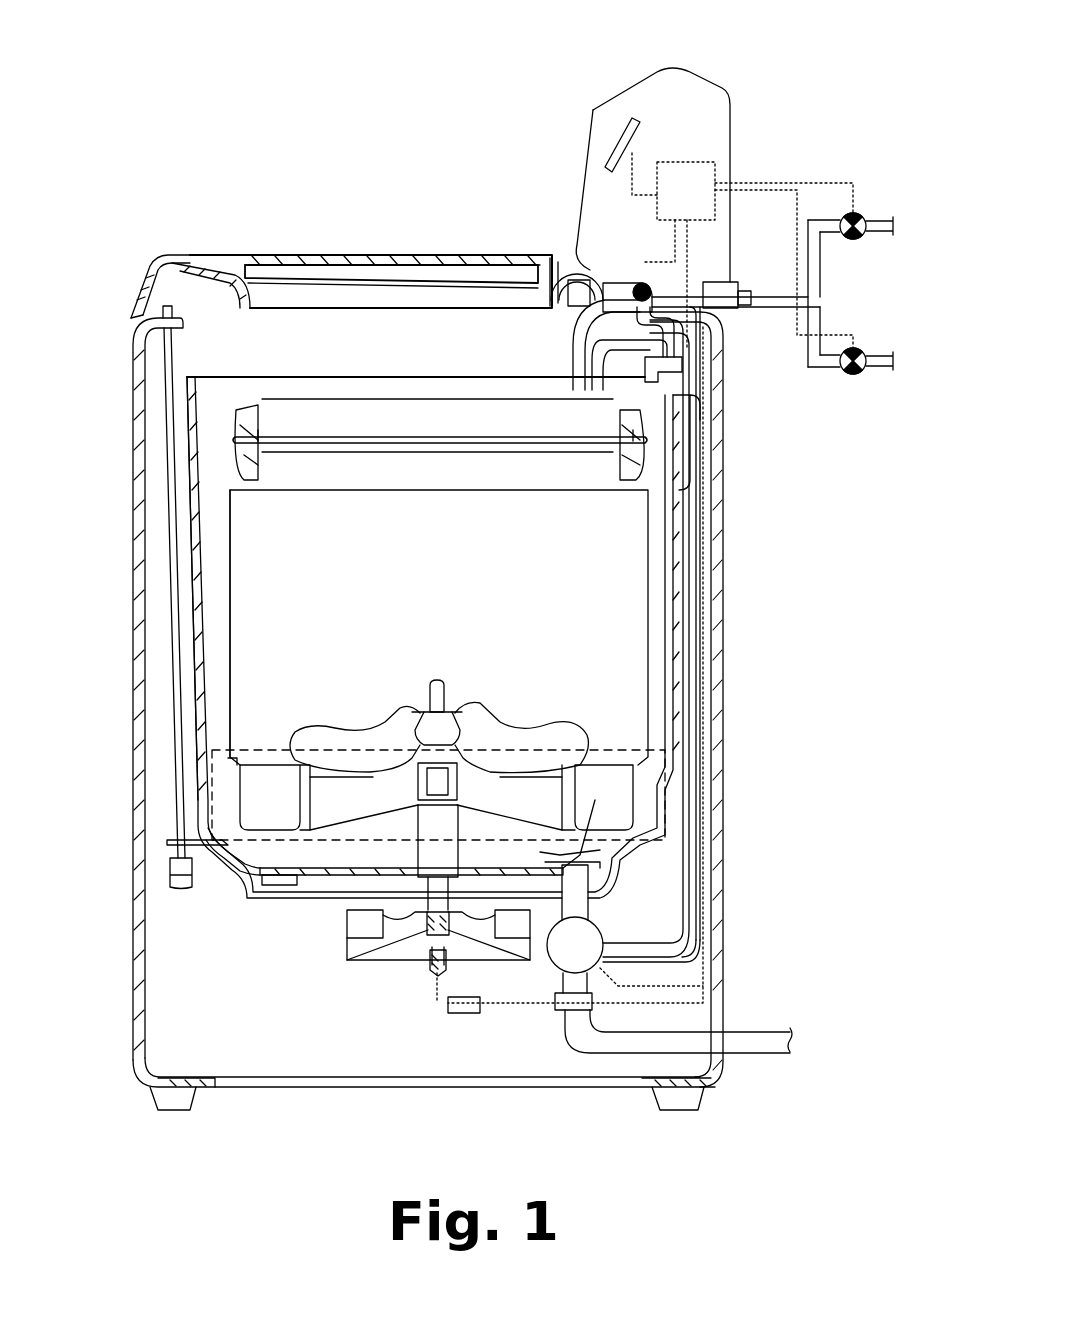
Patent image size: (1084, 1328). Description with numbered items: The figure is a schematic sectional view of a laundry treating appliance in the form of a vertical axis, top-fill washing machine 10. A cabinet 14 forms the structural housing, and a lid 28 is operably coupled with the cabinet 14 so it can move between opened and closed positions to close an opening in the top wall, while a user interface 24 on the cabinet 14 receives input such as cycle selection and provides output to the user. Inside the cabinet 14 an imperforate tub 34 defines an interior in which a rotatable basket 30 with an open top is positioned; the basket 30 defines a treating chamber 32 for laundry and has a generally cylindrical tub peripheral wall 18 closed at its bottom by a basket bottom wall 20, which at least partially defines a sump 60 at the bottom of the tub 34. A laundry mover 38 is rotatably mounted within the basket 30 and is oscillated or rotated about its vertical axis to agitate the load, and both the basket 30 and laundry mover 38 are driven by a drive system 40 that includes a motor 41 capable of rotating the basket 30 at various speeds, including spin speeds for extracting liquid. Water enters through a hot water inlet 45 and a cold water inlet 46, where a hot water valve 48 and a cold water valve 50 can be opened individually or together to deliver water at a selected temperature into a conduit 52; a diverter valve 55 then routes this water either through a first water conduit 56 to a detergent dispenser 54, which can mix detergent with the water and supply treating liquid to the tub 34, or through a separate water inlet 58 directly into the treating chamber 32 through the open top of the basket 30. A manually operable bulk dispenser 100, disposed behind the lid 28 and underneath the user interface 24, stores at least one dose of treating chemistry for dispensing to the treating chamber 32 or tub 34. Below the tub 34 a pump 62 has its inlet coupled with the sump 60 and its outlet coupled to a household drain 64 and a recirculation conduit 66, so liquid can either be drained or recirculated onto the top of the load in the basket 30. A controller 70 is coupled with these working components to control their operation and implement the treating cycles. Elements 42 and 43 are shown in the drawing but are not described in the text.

The washing machine 10 is at (121, 156).
The cabinet 14 is at (120, 299).
The tub peripheral wall 18 is at (230, 690).
The basket bottom wall 20 is at (362, 709).
The user interface 24 is at (654, 103).
The lid 28 is at (345, 252).
The basket 30 is at (230, 592).
The treating chamber 32 is at (416, 540).
The tub 34 is at (192, 495).
The laundry mover 38 is at (515, 748).
The drive system 40 is at (493, 953).
The motor 41 is at (345, 825).
The mounting bracket 42 is at (282, 883).
The sensor 43 is at (462, 1015).
The hot water inlet 45 is at (880, 220).
The cold water inlet 46 is at (888, 372).
The hot water valve 48 is at (858, 242).
The cold water valve 50 is at (855, 376).
The conduit 52 is at (775, 290).
The detergent dispenser 54 is at (678, 370).
The diverter valve 55 is at (638, 283).
The first water conduit 56 is at (693, 334).
The separate water inlet 58 is at (560, 292).
The sump 60 is at (580, 853).
The pump 62 is at (565, 960).
The household drain 64 is at (755, 1048).
The recirculation conduit 66 is at (700, 678).
The controller 70 is at (695, 178).
The bulk dispenser 100 is at (583, 343).